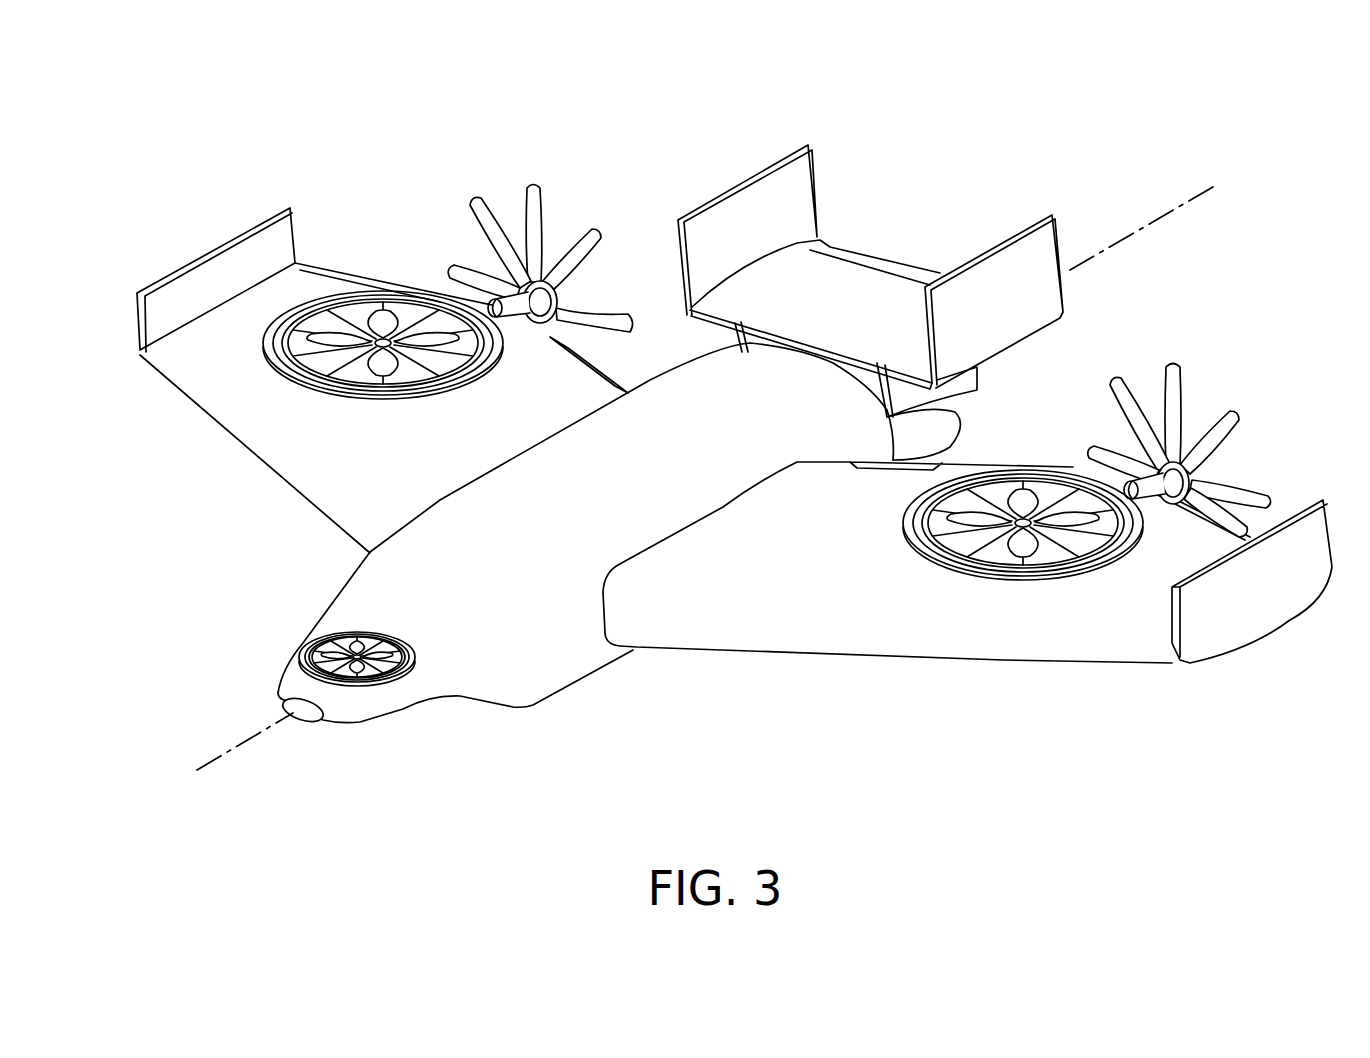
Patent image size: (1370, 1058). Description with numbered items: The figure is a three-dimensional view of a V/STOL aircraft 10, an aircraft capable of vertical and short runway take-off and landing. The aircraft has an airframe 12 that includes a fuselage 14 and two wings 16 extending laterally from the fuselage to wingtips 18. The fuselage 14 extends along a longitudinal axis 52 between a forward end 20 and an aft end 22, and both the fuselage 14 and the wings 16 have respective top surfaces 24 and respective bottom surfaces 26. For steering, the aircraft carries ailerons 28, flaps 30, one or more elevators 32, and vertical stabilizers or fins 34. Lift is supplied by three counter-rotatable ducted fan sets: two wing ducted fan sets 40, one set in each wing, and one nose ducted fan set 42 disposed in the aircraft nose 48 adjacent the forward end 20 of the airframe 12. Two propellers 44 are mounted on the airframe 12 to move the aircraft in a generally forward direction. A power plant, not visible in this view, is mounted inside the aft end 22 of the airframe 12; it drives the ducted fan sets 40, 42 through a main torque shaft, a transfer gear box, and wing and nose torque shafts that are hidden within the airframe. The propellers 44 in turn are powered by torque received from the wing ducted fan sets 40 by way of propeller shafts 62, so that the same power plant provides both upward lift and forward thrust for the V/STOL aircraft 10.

The V/STOL aircraft 10 is at (1062, 106).
The airframe 12 is at (457, 507).
The fuselage 14 is at (650, 375).
The wings 16 is at (217, 428).
The wingtips 18 is at (277, 242).
The forward end 20 is at (303, 717).
The aft end 22 is at (972, 397).
The top surfaces 24 is at (523, 492).
The bottom surfaces 26 is at (673, 657).
The ailerons 28 is at (373, 280).
The flaps 30 is at (607, 360).
The elevators 32 is at (900, 260).
The vertical stabilizers 34 is at (750, 170).
The wing ducted fan sets 40 is at (410, 292).
The nose ducted fan set 42 is at (393, 680).
The propellers 44 is at (547, 183).
The aircraft nose 48 is at (293, 660).
The longitudinal axis 52 is at (1183, 202).
The propeller shafts 62 is at (513, 250).